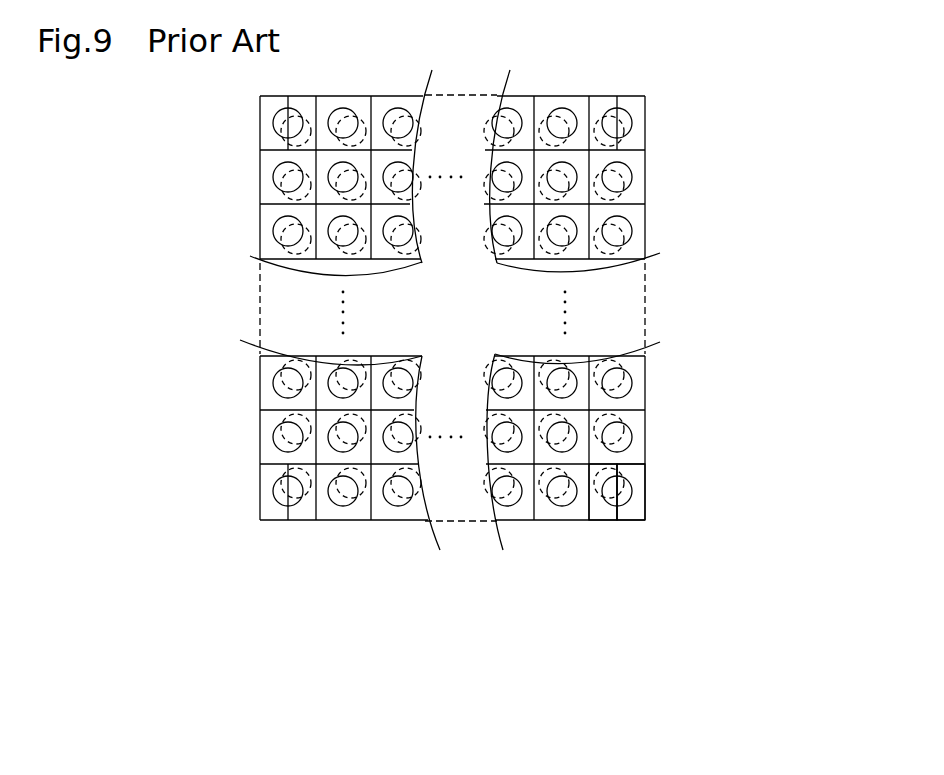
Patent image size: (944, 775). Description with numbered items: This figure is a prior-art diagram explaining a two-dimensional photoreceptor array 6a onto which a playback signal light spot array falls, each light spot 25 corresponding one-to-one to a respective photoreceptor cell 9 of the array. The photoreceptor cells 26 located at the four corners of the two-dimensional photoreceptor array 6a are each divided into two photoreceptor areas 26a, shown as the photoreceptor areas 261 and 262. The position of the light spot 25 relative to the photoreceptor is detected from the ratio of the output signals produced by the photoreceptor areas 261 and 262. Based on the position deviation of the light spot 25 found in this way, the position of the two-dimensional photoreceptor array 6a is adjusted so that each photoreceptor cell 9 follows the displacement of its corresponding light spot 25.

The light spot 25 is at (270, 482).
The photoreceptor cell 9 is at (650, 185).
The photoreceptor cell 26 is at (615, 528).
The photoreceptor area 261 is at (645, 468).
The photoreceptor area 262 is at (645, 513).
The photoreceptor areas 26a is at (693, 488).
The two-dimensional photoreceptor array 6a is at (645, 600).